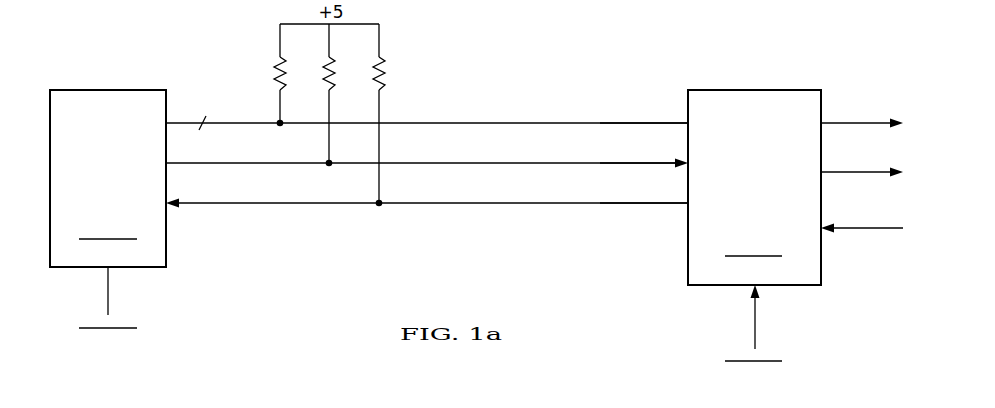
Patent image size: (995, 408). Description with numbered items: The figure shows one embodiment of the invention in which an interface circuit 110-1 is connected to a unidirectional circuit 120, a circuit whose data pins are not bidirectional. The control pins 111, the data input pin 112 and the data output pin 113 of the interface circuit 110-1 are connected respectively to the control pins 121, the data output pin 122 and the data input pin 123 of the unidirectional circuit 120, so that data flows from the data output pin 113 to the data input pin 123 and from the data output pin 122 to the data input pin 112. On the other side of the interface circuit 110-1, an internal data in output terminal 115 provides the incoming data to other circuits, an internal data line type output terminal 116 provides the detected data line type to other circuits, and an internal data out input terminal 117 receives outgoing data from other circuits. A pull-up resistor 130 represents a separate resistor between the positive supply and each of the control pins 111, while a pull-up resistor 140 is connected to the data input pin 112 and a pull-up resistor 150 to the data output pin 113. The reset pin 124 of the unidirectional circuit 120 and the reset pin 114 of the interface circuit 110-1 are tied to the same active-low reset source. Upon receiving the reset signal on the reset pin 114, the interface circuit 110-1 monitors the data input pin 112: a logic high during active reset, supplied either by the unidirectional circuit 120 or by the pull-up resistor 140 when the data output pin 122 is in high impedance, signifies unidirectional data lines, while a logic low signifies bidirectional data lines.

The unidirectional circuit 120 is at (108, 89).
The control pins 121 is at (240, 121).
The data output pin 122 is at (240, 161).
The data input pin 123 is at (240, 201).
The reset pin 124 is at (108, 285).
The pull-up resistor 130 is at (274, 68).
The pull-up resistor 140 is at (334, 72).
The pull-up resistor 150 is at (385, 68).
The interface circuit 110-1 is at (763, 89).
The control pins 111 is at (632, 121).
The data input pin 112 is at (632, 161).
The data output pin 113 is at (632, 201).
The reset pin 114 is at (755, 312).
The internal data in output terminal 115 is at (854, 121).
The internal data line type output terminal 116 is at (854, 170).
The internal data out input terminal 117 is at (854, 226).